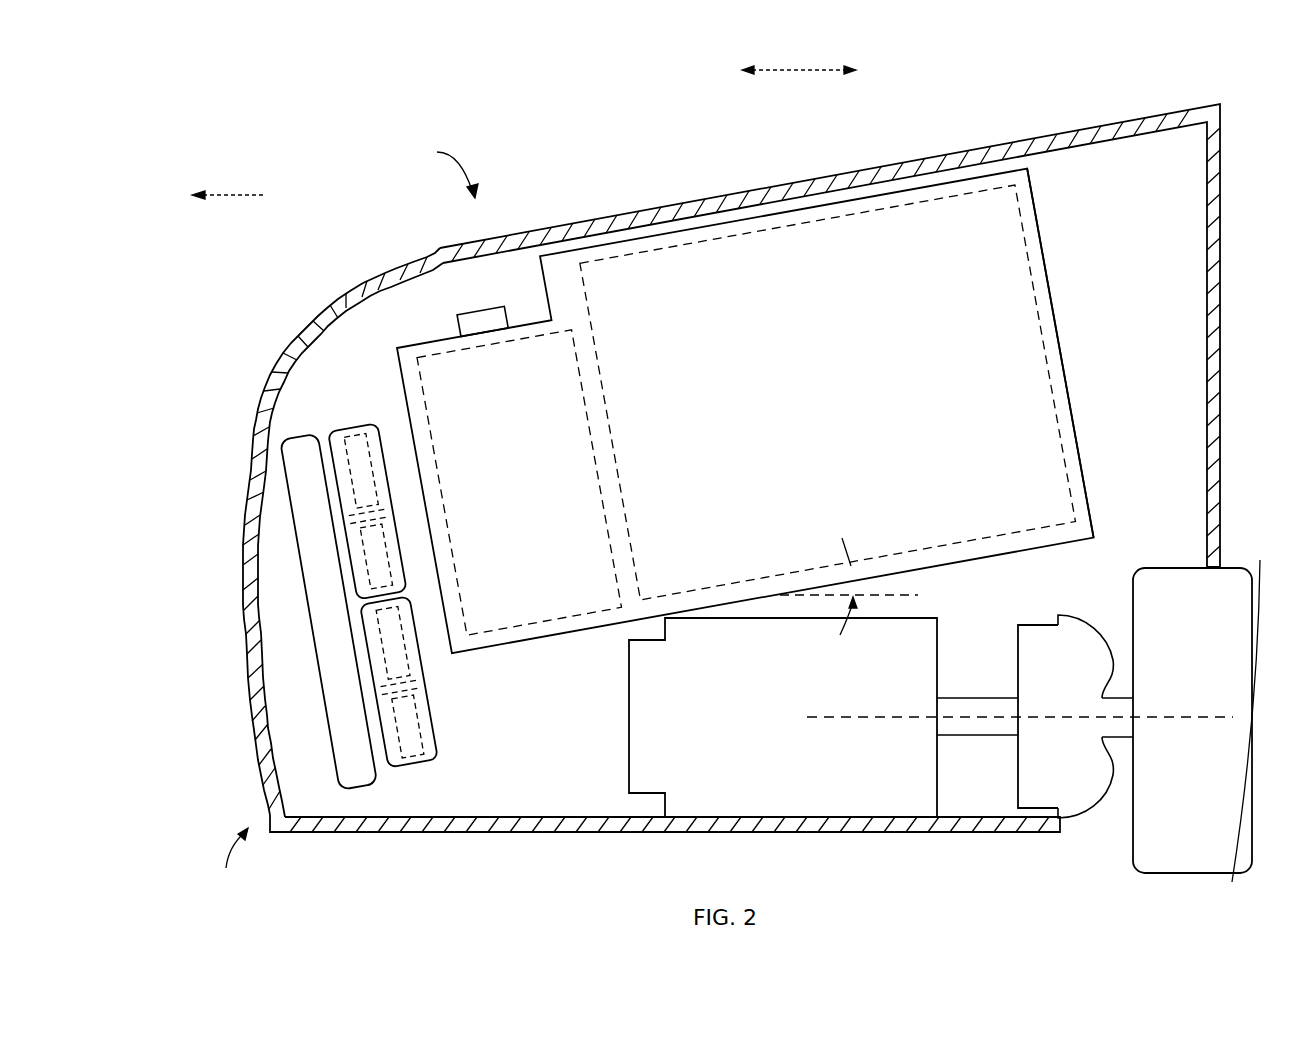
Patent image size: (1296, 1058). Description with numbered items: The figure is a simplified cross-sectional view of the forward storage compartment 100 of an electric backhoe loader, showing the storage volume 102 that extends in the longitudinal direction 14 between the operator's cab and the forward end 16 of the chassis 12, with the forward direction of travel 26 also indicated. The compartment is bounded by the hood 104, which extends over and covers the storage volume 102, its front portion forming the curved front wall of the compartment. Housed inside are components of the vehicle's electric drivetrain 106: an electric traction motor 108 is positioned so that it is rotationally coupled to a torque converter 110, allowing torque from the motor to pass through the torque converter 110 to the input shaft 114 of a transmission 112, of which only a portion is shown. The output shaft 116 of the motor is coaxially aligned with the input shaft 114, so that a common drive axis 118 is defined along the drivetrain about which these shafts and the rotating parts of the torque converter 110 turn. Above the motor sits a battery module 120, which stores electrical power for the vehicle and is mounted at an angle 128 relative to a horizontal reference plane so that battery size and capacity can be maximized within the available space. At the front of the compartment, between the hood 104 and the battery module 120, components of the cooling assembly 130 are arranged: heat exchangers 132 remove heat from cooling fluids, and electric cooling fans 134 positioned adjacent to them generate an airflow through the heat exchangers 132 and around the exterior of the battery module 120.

The chassis 12 is at (585, 833).
The longitudinal direction 14 is at (797, 68).
The forward end 16 is at (226, 864).
The forward direction of travel 26 is at (226, 193).
The forward storage compartment 100 is at (434, 169).
The storage volume 102 is at (1120, 270).
The hood 104 is at (601, 219).
The electric drivetrain 106 is at (944, 721).
The electric traction motor 108 is at (701, 710).
The torque converter 110 is at (1068, 671).
The transmission 112 is at (1176, 648).
The input shaft 114 is at (1125, 740).
The output shaft 116 is at (977, 697).
The common drive axis 118 is at (866, 722).
The battery module 120 is at (721, 437).
The angle 128 is at (856, 570).
The cooling assembly 130 is at (288, 398).
The heat exchangers 132 is at (310, 548).
The electric cooling fans 134 is at (352, 428).